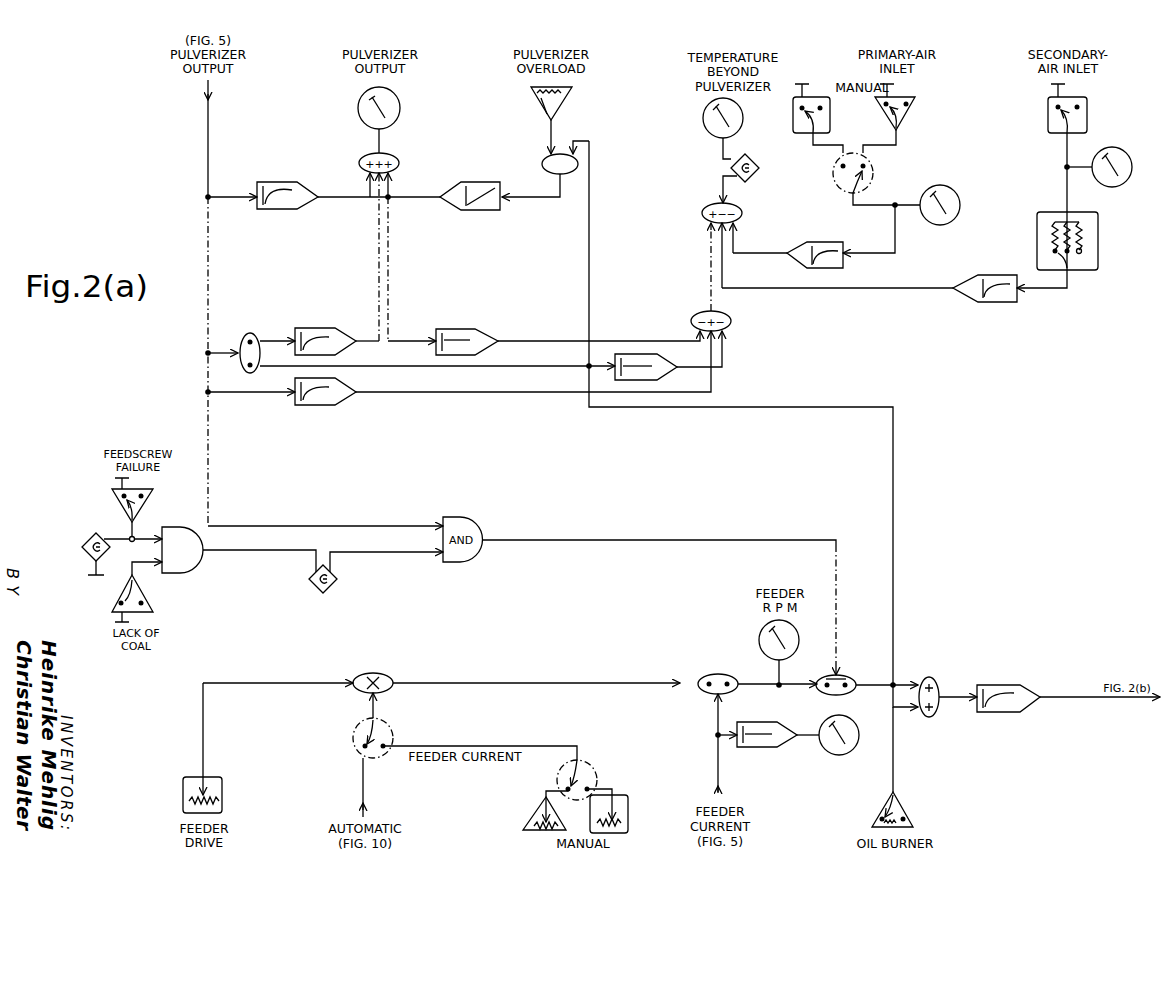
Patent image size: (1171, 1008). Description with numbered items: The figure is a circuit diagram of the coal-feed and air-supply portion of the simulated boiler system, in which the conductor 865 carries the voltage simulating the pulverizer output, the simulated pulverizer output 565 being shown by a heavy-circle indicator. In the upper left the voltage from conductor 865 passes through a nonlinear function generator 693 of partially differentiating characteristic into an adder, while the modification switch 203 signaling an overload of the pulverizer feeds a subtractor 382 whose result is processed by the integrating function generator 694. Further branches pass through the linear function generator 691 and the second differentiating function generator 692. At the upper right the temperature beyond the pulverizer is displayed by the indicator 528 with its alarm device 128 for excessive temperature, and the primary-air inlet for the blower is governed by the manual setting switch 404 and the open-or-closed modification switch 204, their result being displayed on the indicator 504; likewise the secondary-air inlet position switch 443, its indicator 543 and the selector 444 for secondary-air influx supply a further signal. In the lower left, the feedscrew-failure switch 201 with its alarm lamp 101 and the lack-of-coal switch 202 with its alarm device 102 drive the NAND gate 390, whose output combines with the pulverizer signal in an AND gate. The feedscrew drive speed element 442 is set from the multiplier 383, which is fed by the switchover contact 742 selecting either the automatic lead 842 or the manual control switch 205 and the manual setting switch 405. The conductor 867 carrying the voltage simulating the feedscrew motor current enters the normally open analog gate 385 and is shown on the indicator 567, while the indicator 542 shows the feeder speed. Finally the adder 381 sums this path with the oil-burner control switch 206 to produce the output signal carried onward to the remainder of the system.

The conductor for voltage simulating pulverizer output 865 is at (212, 125).
The simulated pulverizer output 565 is at (401, 106).
The overload of pulverizer switch 203 is at (576, 110).
The analog subtractor 382 is at (542, 156).
The function generator with nonlinear integrating characteristic 694 is at (472, 182).
The function generator with nonlinear differentiating characteristic 693 is at (280, 210).
The temperature indicator beyond pulverizer 528 is at (709, 141).
The excessive temperature beyond pulverizer alarm 128 is at (760, 166).
The manual primary-air setting switch 404 is at (792, 128).
The control of primary-air inlet for blower 204 is at (908, 119).
The primary-air indicator 504 is at (940, 226).
The open/closed position switch of secondary-air inlet 443 is at (1088, 125).
The secondary-air indicator 543 is at (1116, 188).
The selector for secondary-air influx 444 is at (1093, 270).
The function generator of linear characteristic 691 is at (642, 352).
The function generator with nonlinear differentiating characteristic 692 is at (316, 406).
The failure of feedscrew switch 201 is at (112, 488).
The alarm lamp 101 is at (90, 536).
The NAND gate 390 is at (204, 565).
The lack of coal for feedscrew switch 202 is at (152, 613).
The alarm device 102 is at (331, 588).
The analog multiplier 383 is at (375, 673).
The selector switch for feedscrew drive 742 is at (397, 736).
The speed of feedscrew drive 442 is at (185, 776).
The lead for automatic feedscrew control 842 is at (360, 780).
The manual control for feedscrew drive 205 is at (530, 813).
The manual feedscrew setting switch 405 is at (628, 807).
The conductor for voltage simulating input current for feedscrew motor 867 is at (717, 755).
The normally open analog-type gate 385 is at (707, 673).
The feeder rpm indicator 542 is at (765, 629).
The feeder current indicator 567 is at (818, 750).
The analog adder 381 is at (930, 677).
The control of oil burner 206 is at (897, 793).